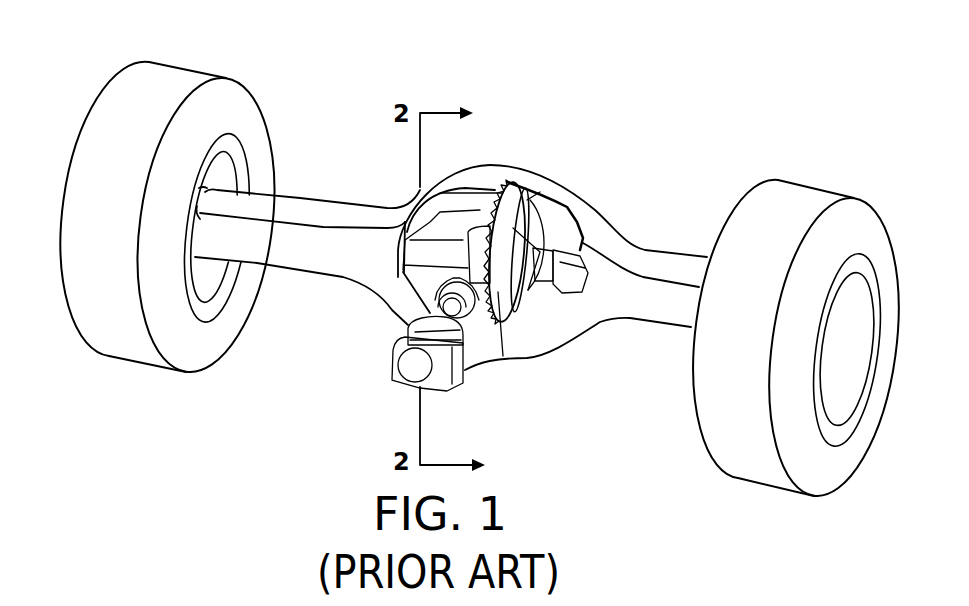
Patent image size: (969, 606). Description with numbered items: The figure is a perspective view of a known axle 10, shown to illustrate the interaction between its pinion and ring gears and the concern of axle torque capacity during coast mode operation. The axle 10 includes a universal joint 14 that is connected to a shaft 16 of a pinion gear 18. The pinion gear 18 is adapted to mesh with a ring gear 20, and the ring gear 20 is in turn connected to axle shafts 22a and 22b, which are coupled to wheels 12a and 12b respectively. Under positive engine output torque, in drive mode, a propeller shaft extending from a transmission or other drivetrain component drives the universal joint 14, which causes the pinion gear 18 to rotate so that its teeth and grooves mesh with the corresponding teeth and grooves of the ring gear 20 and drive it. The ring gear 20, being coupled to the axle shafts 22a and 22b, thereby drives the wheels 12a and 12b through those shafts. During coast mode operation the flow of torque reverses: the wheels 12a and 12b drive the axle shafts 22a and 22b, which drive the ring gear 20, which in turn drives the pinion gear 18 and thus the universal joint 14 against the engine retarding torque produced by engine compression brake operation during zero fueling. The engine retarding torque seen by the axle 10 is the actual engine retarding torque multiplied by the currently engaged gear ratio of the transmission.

The axle 10 is at (636, 74).
The wheel 12a is at (167, 78).
The wheel 12b is at (790, 202).
The universal joint 14 is at (437, 390).
The shaft 16 is at (400, 320).
The pinion gear 18 is at (503, 356).
The ring gear 20 is at (517, 187).
The axle shaft 22a is at (437, 253).
The axle shaft 22b is at (573, 240).